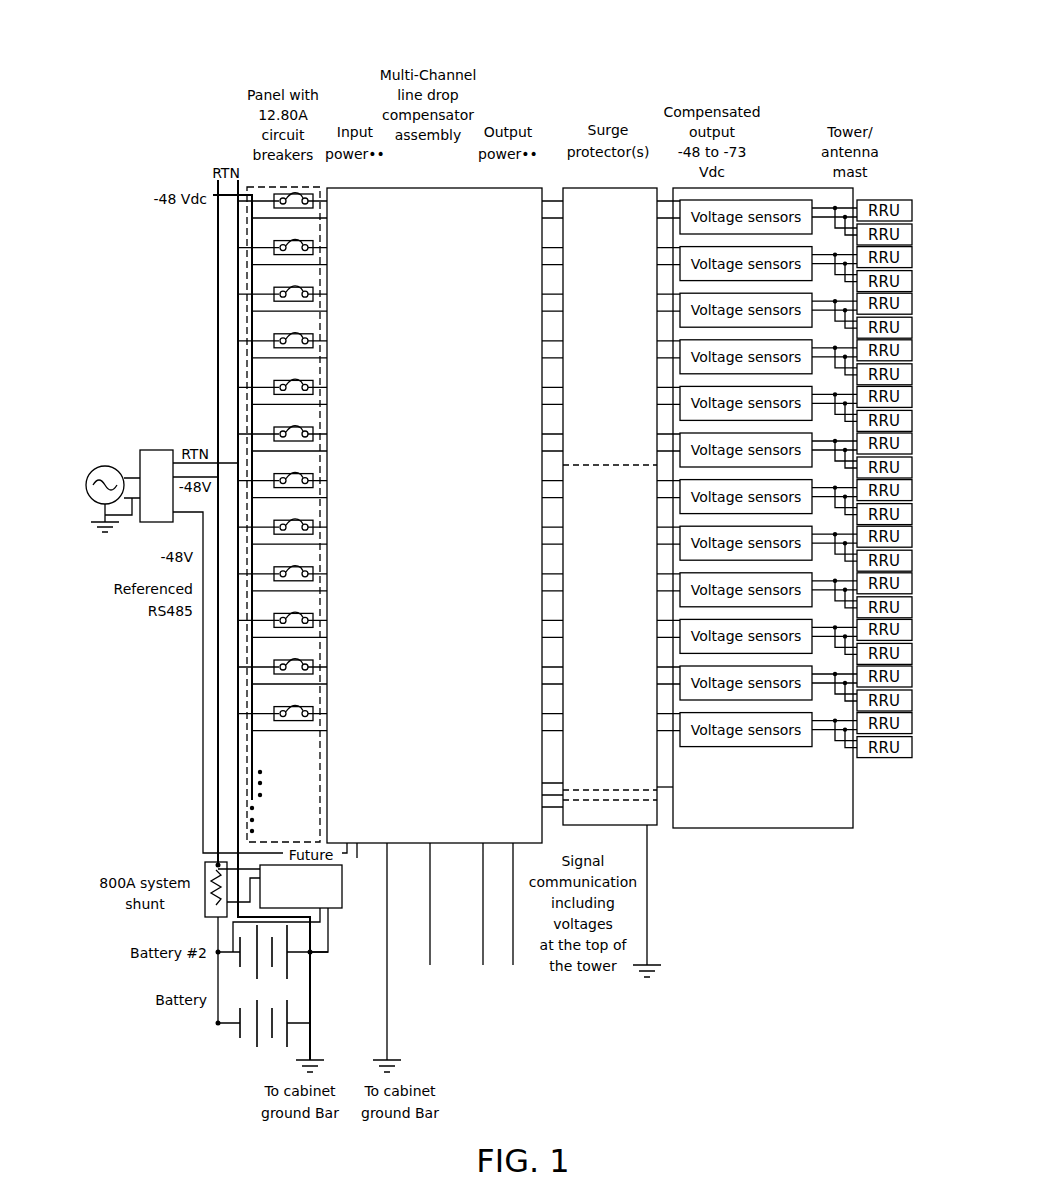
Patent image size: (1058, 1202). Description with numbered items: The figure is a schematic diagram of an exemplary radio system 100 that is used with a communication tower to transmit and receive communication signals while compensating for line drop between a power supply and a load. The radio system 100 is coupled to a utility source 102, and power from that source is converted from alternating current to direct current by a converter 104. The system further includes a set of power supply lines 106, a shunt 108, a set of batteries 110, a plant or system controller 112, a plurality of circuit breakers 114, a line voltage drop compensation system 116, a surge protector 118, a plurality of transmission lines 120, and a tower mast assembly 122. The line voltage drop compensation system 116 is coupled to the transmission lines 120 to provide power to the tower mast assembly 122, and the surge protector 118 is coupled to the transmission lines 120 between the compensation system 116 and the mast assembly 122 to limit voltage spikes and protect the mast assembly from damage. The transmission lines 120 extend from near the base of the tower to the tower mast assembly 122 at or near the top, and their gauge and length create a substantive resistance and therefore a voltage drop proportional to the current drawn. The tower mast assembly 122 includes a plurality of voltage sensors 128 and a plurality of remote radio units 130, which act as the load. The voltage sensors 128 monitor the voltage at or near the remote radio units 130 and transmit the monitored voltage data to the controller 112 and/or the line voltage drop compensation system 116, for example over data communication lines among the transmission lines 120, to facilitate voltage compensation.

The radio system 100 is at (308, 48).
The utility source 102 is at (104, 465).
The converter 104 is at (158, 450).
The power supply lines 106 is at (237, 227).
The shunt 108 is at (210, 862).
The batteries 110 is at (216, 1026).
The plant or system controller 112 is at (342, 905).
The circuit breakers 114 is at (248, 187).
The line voltage drop compensation system 116 is at (540, 187).
The surge protector 118 is at (655, 187).
The transmission lines 120 is at (555, 812).
The tower mast assembly 122 is at (792, 187).
The voltage sensors 128 is at (797, 748).
The remote radio units (RRU) 130 is at (895, 759).